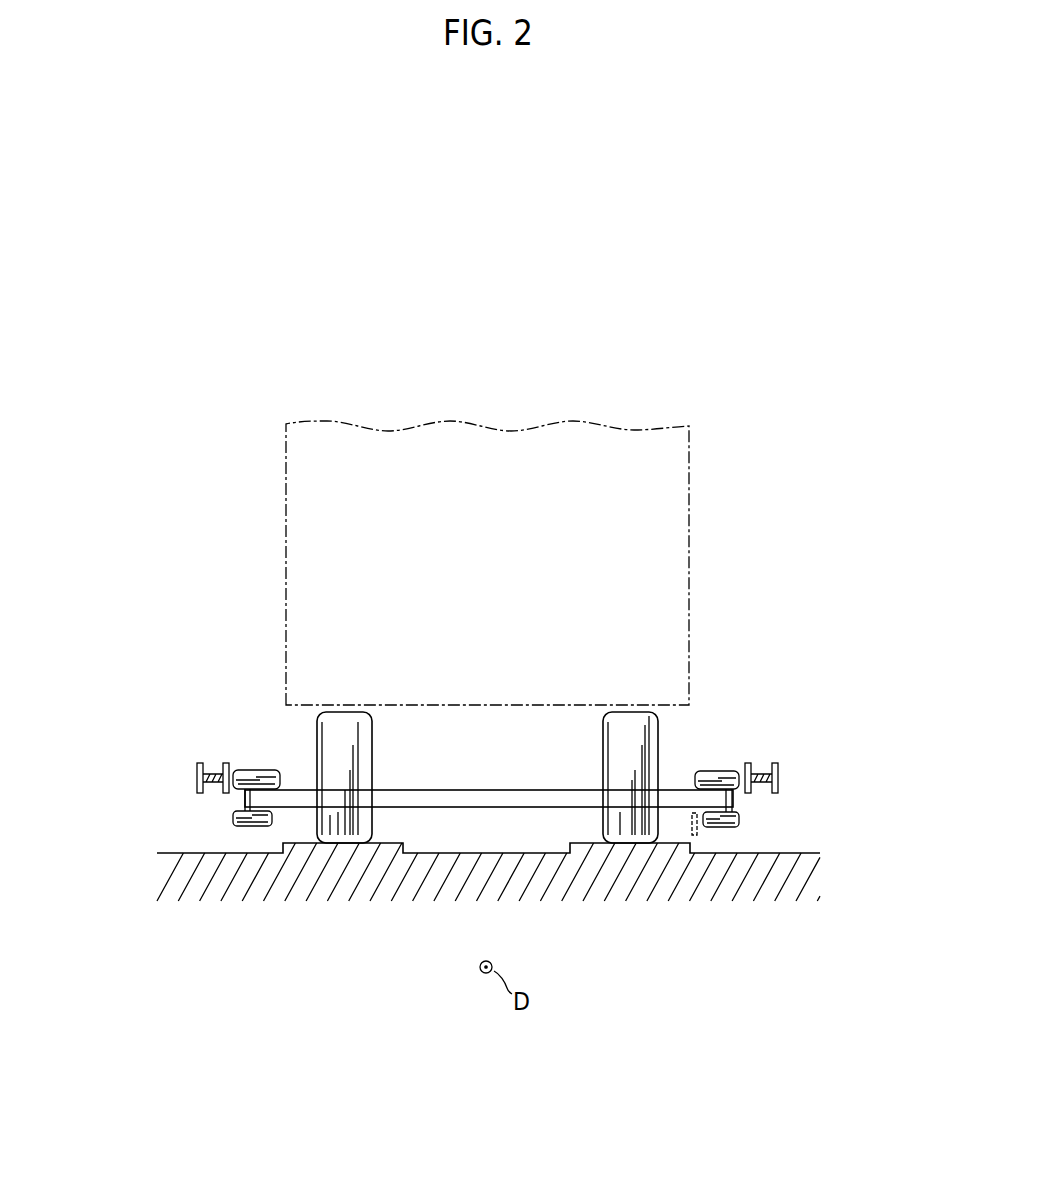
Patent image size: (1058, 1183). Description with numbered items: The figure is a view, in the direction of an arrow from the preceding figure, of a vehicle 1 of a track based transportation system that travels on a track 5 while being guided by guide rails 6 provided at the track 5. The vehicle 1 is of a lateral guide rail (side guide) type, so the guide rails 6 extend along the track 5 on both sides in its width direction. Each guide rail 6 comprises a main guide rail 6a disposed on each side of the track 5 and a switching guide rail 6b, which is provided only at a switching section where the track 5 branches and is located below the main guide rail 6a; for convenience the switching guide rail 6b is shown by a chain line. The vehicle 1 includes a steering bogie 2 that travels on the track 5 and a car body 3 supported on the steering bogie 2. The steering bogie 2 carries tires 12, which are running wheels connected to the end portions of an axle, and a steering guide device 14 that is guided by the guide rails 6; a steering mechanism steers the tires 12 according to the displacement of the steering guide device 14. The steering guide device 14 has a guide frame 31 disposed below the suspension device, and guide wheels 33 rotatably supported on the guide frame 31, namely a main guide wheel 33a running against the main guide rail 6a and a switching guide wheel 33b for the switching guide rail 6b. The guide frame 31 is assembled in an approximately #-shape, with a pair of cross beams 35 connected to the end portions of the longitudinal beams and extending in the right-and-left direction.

The vehicle 1 is at (749, 385).
The steering bogie 2 is at (555, 823).
The car body 3 is at (689, 471).
The track 5 is at (235, 876).
The guide rail 6 is at (533, 776).
The main guide rail 6a is at (783, 777).
The switching guide rail 6b is at (684, 819).
The tire 12 is at (652, 751).
The steering guide device 14 is at (489, 788).
The guide frame 31 is at (457, 806).
The guide wheel 33 is at (555, 886).
The main guide wheel 33a is at (739, 794).
The switching guide wheel 33b is at (738, 830).
The cross beam 35 is at (489, 883).